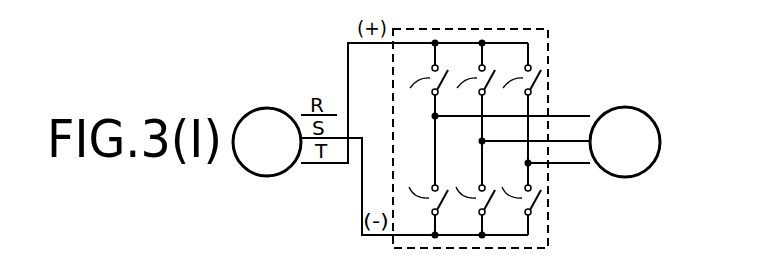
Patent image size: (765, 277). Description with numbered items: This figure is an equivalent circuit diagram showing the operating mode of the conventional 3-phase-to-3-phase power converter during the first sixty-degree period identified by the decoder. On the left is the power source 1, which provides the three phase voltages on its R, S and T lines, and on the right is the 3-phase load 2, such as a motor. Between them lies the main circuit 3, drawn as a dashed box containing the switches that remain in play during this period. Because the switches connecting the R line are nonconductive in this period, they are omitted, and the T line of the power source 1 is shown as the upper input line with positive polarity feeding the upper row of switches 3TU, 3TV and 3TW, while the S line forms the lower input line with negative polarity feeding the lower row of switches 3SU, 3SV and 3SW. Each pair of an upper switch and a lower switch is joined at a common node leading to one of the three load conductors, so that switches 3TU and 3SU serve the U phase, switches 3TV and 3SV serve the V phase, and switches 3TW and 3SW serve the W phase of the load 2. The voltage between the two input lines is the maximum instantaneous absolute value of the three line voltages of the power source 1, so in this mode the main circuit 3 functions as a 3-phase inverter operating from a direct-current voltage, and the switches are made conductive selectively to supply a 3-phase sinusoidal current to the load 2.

The power source 1 is at (263, 113).
The 3-phase load 2 is at (624, 118).
The main circuit 3 is at (491, 138).
The switch 3TU is at (422, 89).
The switch 3TV is at (468, 89).
The switch 3TW is at (514, 89).
The switch 3SU is at (422, 191).
The switch 3SV is at (468, 191).
The switch 3SW is at (514, 191).